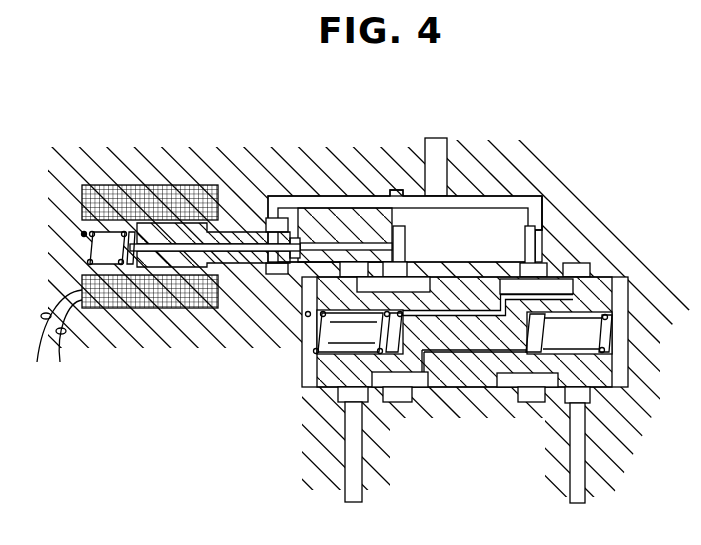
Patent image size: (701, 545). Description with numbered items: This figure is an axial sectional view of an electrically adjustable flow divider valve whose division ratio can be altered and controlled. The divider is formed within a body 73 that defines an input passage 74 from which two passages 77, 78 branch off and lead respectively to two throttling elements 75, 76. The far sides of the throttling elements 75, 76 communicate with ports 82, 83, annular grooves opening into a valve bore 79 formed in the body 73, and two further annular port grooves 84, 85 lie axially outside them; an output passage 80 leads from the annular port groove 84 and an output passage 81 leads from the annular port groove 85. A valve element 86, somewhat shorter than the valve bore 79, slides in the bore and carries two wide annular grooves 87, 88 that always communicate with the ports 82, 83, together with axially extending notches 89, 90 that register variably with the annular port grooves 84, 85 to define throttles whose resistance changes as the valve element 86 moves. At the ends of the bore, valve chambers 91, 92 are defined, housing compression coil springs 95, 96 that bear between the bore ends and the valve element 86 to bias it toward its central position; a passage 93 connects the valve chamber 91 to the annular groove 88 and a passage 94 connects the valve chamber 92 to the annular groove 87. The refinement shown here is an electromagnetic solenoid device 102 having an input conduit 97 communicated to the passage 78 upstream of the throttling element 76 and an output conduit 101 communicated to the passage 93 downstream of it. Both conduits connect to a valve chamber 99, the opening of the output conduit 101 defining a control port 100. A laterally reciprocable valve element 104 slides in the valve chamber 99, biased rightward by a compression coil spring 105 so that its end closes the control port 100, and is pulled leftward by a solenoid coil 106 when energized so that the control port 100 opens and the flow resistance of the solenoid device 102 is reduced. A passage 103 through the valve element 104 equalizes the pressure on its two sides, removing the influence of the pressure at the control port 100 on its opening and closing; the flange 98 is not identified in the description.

The body 73 is at (490, 180).
The input passage 74 is at (446, 158).
The throttling element 75 is at (525, 232).
The throttling element 76 is at (405, 230).
The passage 77 is at (530, 197).
The passage 78 is at (395, 194).
The valve bore 79 is at (630, 293).
The output passage 80 is at (586, 477).
The output passage 81 is at (345, 472).
The port 82 is at (521, 270).
The port 83 is at (406, 268).
The annular port groove 84 is at (592, 395).
The annular port groove 85 is at (340, 393).
The valve element 86 is at (463, 388).
The annular groove 87 is at (516, 392).
The annular groove 88 is at (420, 395).
The notch 89 is at (574, 266).
The notch 90 is at (360, 285).
The valve chamber 91 is at (630, 325).
The valve chamber 92 is at (310, 322).
The passage 93 is at (569, 333).
The passage 94 is at (466, 311).
The compression coil spring 95 is at (628, 348).
The compression coil spring 96 is at (318, 346).
The input conduit 97 is at (333, 199).
The flange 98 is at (264, 222).
The valve chamber 99 is at (212, 222).
The control port 100 is at (297, 238).
The output conduit 101 is at (347, 247).
The electromagnetic solenoid device 102 is at (110, 185).
The passage 103 is at (165, 290).
The valve element 104 is at (190, 258).
The compression coil spring 105 is at (83, 235).
The solenoid coil 106 is at (150, 186).